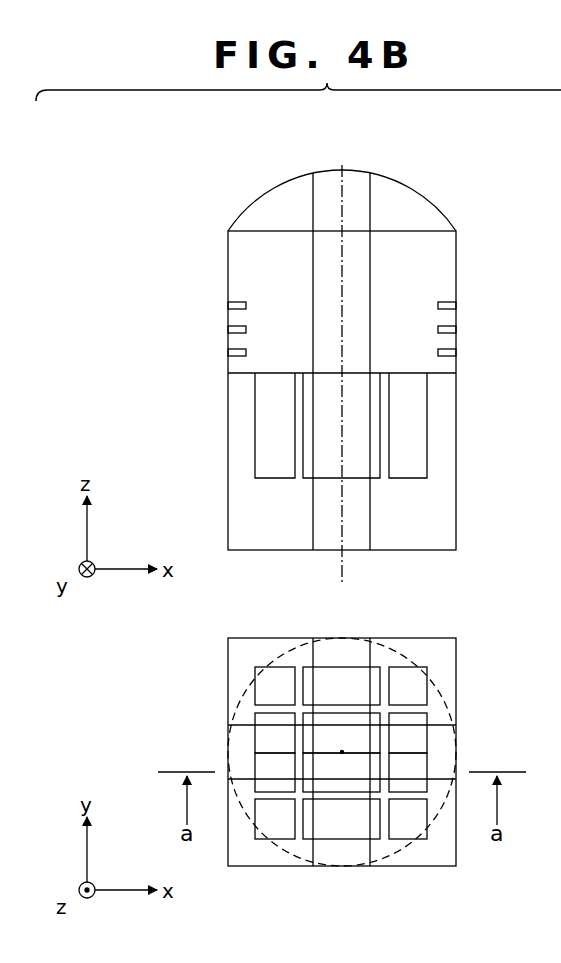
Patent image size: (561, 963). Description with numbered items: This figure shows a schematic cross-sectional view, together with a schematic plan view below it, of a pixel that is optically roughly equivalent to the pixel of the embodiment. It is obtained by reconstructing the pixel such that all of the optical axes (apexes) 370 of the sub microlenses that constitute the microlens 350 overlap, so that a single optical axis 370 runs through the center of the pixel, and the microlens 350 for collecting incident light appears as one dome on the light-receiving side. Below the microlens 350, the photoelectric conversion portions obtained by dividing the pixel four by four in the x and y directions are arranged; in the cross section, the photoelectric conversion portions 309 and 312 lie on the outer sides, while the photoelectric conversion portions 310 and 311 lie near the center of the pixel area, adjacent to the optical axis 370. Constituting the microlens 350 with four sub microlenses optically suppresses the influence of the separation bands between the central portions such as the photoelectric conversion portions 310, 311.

The microlens 350 is at (417, 190).
The optical axes (apexes) of the sub microlenses 370 is at (343, 163).
The photoelectric conversion portion 309 is at (262, 447).
The photoelectric conversion portion 310 is at (320, 465).
The photoelectric conversion portion 311 is at (363, 465).
The photoelectric conversion portion 312 is at (422, 449).